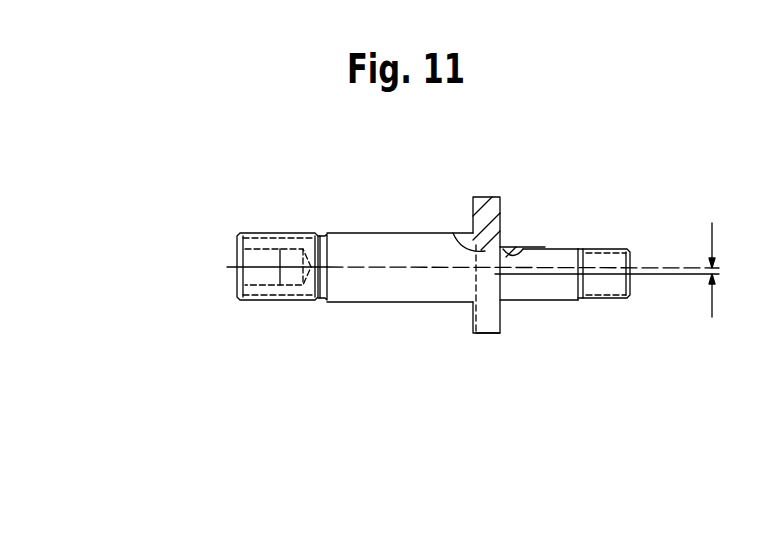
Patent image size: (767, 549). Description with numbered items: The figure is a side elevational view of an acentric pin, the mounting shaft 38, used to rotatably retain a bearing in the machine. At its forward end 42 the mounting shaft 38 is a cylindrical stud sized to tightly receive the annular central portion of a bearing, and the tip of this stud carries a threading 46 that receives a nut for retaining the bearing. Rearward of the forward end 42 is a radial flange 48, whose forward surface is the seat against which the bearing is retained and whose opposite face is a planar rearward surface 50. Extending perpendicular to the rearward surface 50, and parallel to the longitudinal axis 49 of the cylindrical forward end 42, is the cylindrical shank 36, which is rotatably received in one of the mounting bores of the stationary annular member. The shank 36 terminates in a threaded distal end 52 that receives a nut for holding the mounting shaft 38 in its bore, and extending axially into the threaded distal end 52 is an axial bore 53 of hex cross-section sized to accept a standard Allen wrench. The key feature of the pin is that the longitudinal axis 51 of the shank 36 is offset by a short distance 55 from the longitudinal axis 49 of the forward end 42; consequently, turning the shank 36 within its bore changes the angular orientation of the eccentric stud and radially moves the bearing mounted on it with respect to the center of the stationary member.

The mounting shaft 38 is at (362, 172).
The shank 36 is at (413, 302).
The forward end 42 is at (545, 249).
The threading 46 is at (604, 248).
The radial flange 48 is at (487, 335).
The longitudinal axis of the forward end 49 is at (538, 274).
The rearward surface 50 is at (474, 203).
The longitudinal axis of the shank 51 is at (375, 268).
The threaded distal end 52 is at (265, 300).
The axial bore 53 is at (262, 249).
The offset distance 55 is at (728, 270).